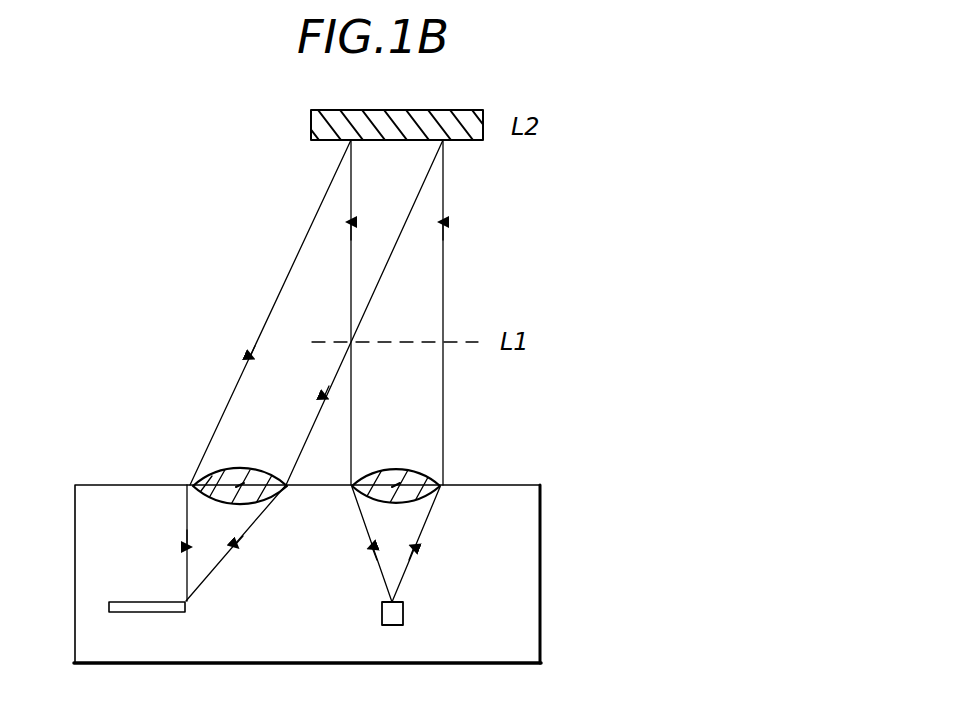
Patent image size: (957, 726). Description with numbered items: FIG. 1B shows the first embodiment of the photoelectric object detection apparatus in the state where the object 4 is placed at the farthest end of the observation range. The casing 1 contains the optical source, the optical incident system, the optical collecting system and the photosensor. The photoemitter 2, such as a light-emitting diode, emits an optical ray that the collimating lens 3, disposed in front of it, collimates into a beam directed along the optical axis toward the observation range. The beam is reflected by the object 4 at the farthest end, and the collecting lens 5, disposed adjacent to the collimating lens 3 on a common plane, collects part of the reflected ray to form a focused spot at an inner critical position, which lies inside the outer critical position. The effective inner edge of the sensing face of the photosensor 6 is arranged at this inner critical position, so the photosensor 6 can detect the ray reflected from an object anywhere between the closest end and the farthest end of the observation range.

The casing 1 is at (520, 537).
The photoemitter 2 is at (398, 616).
The collimating lens 3 is at (417, 434).
The object 4 is at (459, 109).
The collecting lens 5 is at (218, 469).
The photosensor 6 is at (151, 612).